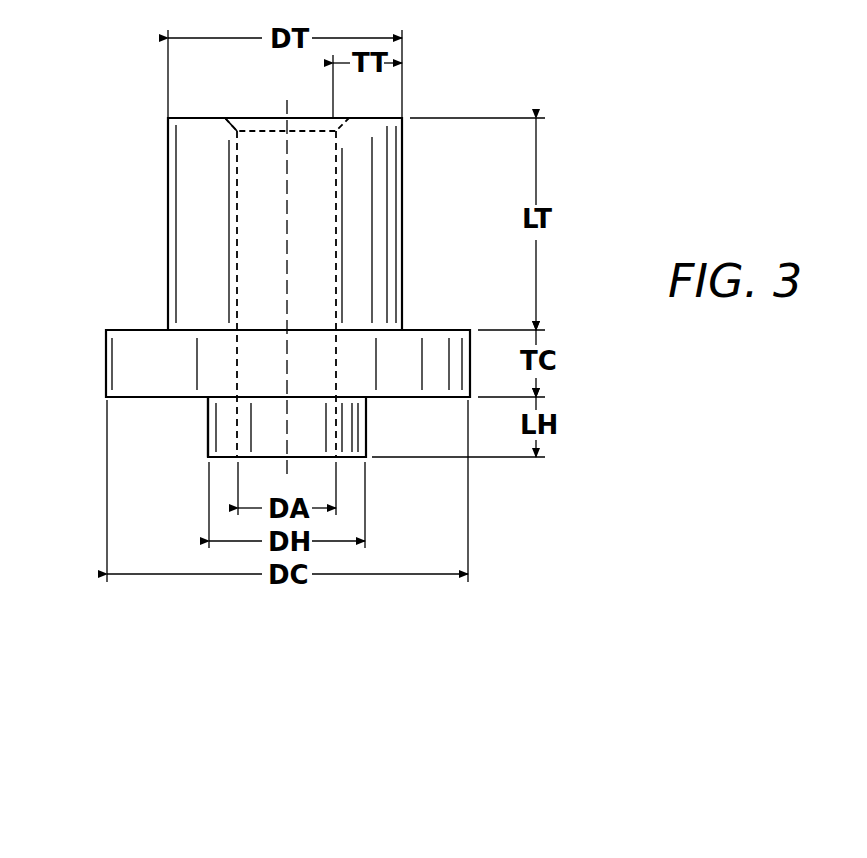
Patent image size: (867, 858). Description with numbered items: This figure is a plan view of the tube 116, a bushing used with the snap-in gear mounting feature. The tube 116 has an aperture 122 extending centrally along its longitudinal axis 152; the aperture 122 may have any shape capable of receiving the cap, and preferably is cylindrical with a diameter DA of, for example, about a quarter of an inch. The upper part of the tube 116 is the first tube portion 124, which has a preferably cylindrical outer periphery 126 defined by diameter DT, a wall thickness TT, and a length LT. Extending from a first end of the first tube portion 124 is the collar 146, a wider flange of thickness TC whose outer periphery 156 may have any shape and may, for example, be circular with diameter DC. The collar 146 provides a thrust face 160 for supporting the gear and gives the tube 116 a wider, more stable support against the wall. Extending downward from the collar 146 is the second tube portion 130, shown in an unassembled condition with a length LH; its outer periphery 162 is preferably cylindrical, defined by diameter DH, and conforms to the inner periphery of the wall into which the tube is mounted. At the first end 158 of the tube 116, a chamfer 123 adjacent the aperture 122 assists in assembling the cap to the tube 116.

The tube 116 is at (275, 256).
The aperture 122 is at (260, 92).
The chamfer 123 is at (236, 117).
The first tube portion 124 is at (184, 173).
The outer periphery 126 is at (168, 222).
The second tube portion 130 is at (223, 440).
The collar 146 is at (116, 352).
The longitudinal axis 152 is at (287, 105).
The outer periphery 156 is at (106, 370).
The first end 158 is at (181, 118).
The thrust face 160 is at (148, 324).
The outer periphery 162 is at (208, 410).